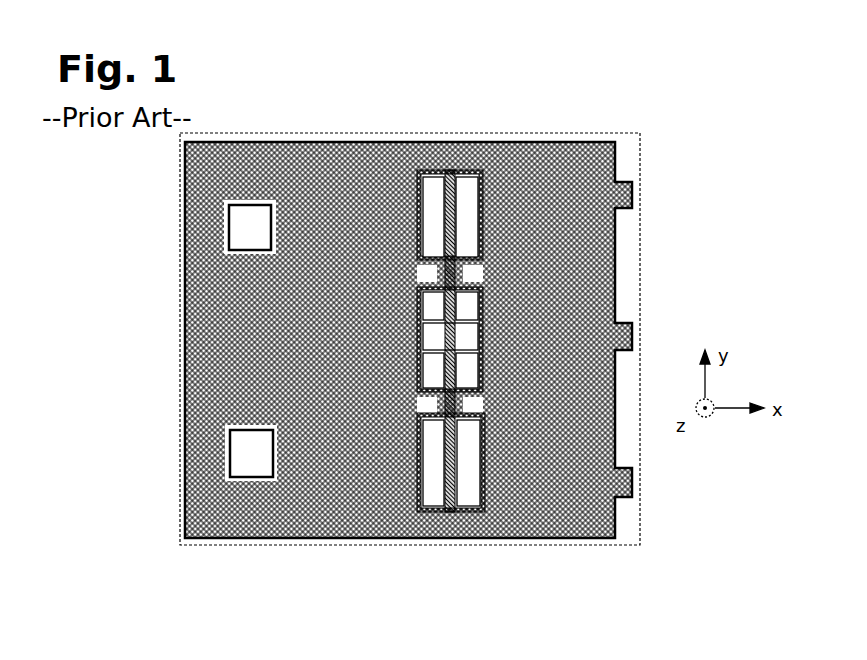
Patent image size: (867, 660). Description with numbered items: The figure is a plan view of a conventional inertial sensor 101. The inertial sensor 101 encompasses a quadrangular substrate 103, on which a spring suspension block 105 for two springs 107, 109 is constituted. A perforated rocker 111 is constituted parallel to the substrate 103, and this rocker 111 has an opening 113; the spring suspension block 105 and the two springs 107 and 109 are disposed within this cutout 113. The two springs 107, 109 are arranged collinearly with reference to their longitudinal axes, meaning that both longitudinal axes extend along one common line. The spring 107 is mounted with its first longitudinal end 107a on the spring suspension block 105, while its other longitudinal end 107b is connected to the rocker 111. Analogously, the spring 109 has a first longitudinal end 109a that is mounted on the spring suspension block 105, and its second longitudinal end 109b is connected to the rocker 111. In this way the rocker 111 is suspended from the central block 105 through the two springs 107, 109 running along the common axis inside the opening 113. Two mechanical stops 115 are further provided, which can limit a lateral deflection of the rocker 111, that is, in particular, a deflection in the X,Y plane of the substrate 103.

The inertial sensor 101 is at (682, 243).
The substrate 103 is at (632, 152).
The spring suspension block 105 is at (440, 340).
The spring 107 is at (470, 435).
The first longitudinal end of spring 107 107a is at (470, 350).
The other longitudinal end of spring 107 107b is at (455, 512).
The spring 109 is at (470, 232).
The first longitudinal end of spring 109 109a is at (470, 312).
The second longitudinal end of spring 109 109b is at (455, 175).
The perforated rocker 111 is at (312, 152).
The opening 113 is at (418, 205).
The mechanical stops 115 is at (230, 226).